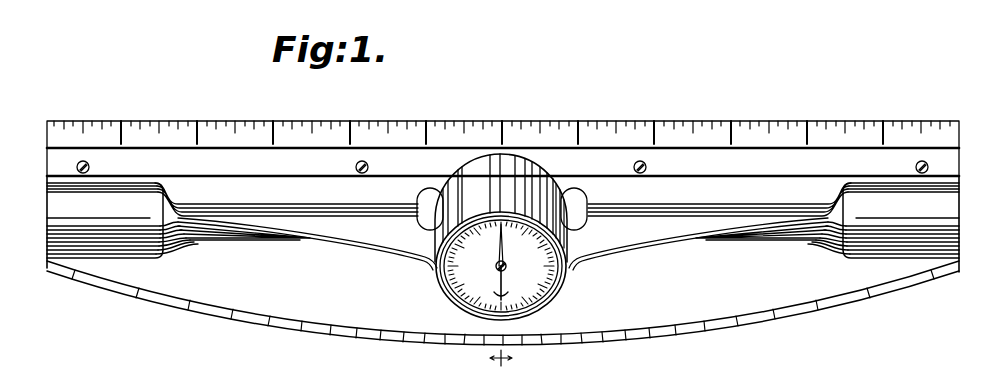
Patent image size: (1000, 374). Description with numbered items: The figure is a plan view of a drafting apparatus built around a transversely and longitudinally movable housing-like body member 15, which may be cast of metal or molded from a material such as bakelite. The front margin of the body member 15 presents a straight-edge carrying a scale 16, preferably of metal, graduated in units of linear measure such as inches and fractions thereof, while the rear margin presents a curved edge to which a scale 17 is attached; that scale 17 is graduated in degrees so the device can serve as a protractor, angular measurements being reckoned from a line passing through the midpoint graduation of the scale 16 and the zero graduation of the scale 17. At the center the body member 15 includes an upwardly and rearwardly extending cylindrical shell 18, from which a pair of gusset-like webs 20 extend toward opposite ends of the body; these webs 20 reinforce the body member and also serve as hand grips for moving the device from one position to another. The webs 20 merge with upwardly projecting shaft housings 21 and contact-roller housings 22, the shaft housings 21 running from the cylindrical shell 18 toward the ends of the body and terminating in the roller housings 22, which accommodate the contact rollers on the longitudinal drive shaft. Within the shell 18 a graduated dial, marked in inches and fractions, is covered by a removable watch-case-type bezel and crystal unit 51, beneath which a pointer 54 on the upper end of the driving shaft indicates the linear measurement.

The body member 15 is at (770, 298).
The scale 16 is at (756, 122).
The scale 17 is at (668, 338).
The cylindrical shell 18 is at (542, 182).
The gusset-like webs 20 is at (386, 238).
The shaft housings 21 is at (278, 236).
The contact-roller housings 22 is at (55, 208).
The bezel and crystal unit 51 is at (552, 285).
The pointer 54 is at (496, 268).